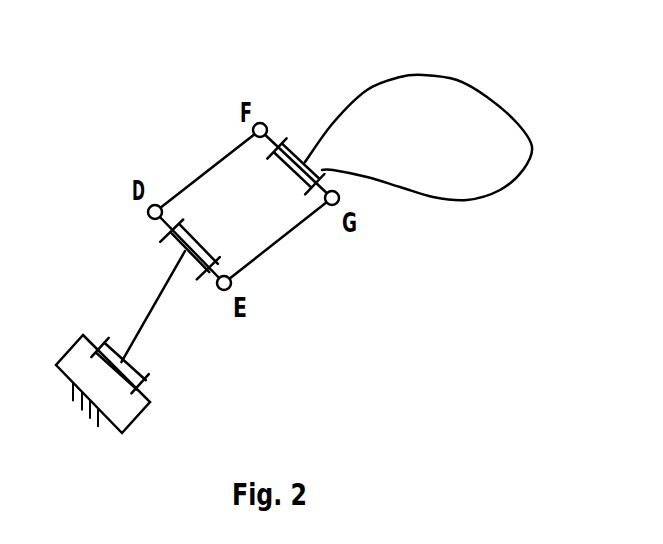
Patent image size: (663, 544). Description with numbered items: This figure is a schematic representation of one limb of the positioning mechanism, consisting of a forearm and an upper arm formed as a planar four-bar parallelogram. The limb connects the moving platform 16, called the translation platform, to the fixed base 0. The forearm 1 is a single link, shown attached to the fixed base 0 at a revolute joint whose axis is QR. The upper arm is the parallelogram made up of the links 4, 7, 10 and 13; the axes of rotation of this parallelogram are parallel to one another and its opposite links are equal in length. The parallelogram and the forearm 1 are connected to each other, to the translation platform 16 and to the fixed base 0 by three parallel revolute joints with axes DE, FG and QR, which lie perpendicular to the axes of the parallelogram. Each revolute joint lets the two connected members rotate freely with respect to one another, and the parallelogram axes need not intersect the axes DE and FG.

The fixed base 0 is at (142, 452).
The forearm 1 is at (145, 323).
The link of the four-bar parallelogram 4 is at (162, 230).
The link of the four-bar parallelogram 7 is at (212, 168).
The link of the four-bar parallelogram 10 is at (287, 232).
The link of the four-bar parallelogram 13 is at (282, 135).
The moving platform 16 is at (437, 92).